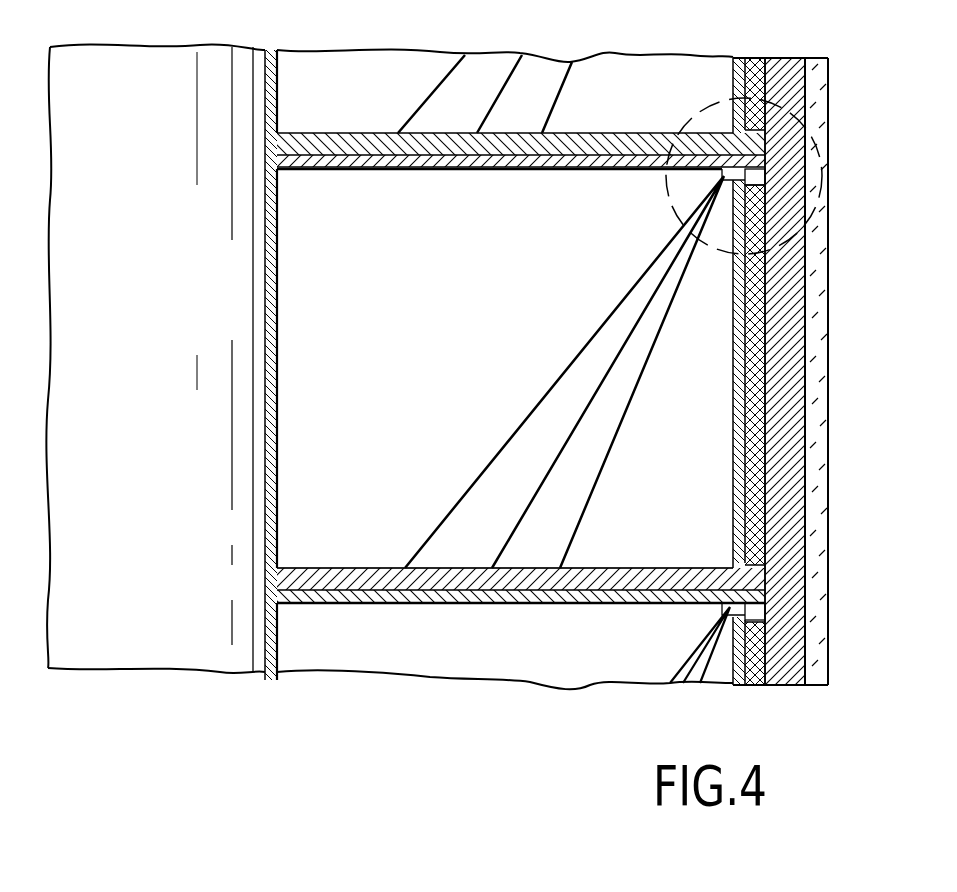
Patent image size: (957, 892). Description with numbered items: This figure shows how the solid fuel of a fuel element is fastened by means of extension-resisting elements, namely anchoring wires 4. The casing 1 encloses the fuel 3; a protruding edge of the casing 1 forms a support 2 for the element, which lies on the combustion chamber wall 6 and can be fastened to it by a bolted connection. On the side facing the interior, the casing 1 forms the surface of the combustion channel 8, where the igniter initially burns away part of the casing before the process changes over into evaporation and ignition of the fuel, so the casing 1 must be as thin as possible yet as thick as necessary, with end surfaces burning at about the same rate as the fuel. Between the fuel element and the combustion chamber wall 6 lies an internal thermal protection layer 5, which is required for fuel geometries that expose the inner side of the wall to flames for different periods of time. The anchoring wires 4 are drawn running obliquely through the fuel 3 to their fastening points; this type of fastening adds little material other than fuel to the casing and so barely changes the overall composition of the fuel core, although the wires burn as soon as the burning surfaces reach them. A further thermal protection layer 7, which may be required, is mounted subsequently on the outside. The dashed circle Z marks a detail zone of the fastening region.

The casing 1 is at (265, 197).
The support 2 is at (487, 590).
The fuel 3 is at (389, 254).
The anchoring wire 4 is at (550, 383).
The internal thermal protection layer 5 is at (748, 371).
The combustion chamber wall 6 is at (767, 458).
The thermal protection layer 7 is at (820, 558).
The combustion channel 8 is at (137, 398).
The detail zone Z is at (781, 176).